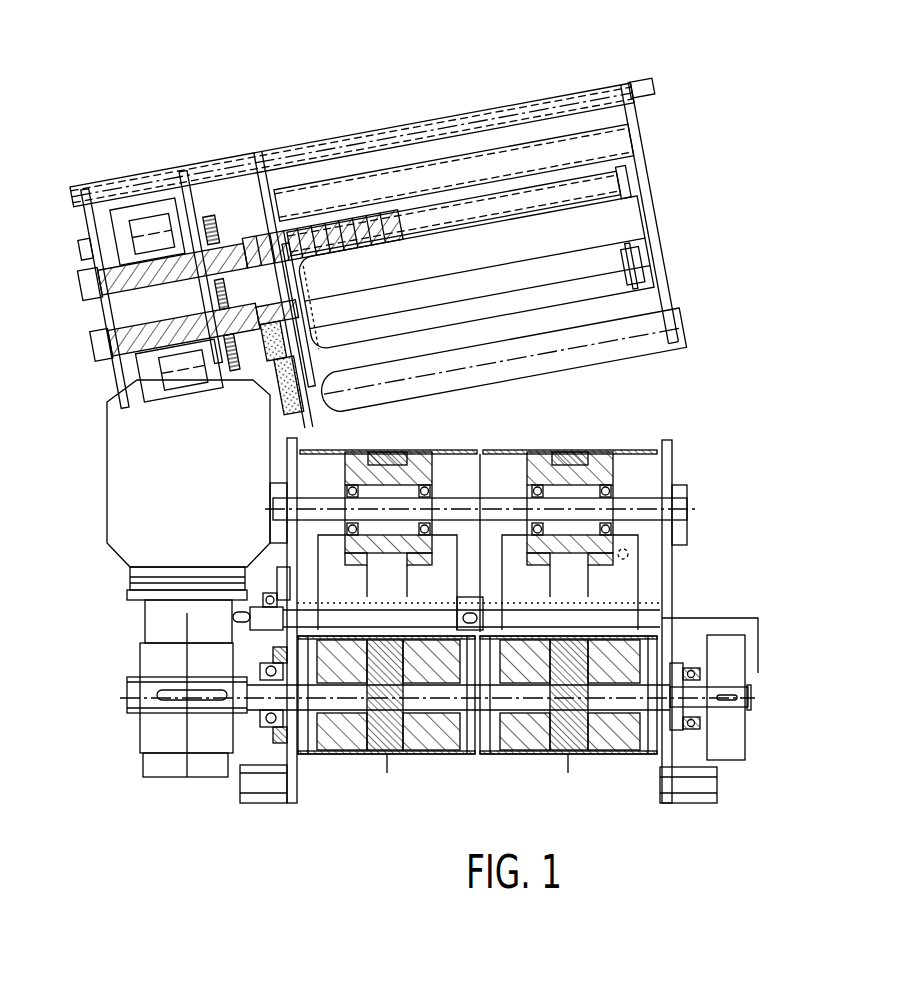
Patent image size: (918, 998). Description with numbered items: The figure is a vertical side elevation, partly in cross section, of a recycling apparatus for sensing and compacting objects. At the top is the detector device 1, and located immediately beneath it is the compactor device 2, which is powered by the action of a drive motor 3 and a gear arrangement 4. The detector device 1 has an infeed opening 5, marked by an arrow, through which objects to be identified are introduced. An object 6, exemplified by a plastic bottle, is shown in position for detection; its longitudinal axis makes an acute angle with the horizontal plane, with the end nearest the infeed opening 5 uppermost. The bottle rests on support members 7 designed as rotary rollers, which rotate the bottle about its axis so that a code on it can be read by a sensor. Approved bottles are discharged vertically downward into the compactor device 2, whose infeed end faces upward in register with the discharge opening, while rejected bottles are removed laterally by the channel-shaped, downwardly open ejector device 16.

The detector device 1 is at (444, 66).
The compactor device 2 is at (346, 851).
The drive motor 3 is at (125, 545).
The gear arrangement 4 is at (150, 727).
The infeed opening 5 is at (704, 254).
The object 6 is at (573, 243).
The support members 7 is at (648, 347).
The ejector device 16 is at (630, 233).